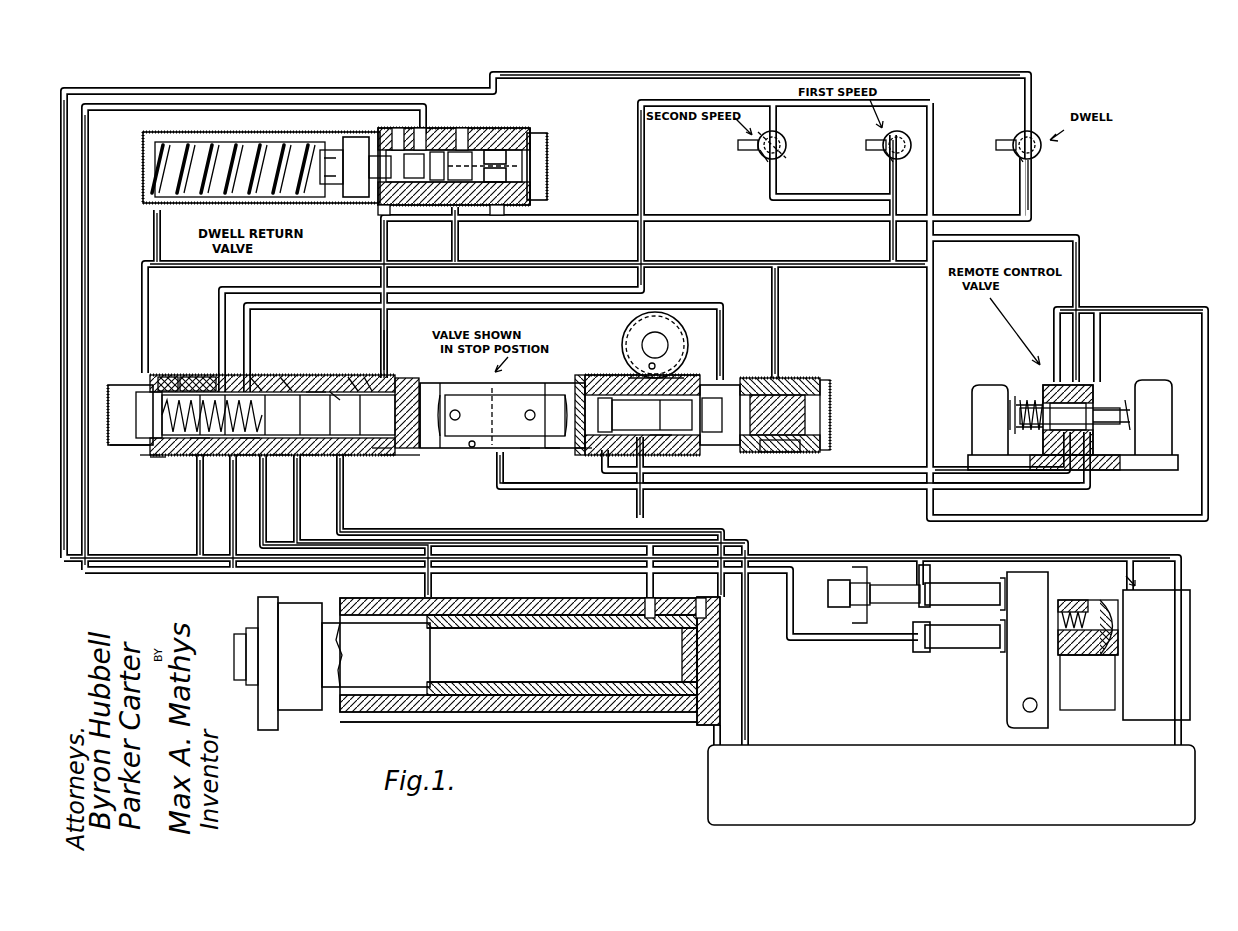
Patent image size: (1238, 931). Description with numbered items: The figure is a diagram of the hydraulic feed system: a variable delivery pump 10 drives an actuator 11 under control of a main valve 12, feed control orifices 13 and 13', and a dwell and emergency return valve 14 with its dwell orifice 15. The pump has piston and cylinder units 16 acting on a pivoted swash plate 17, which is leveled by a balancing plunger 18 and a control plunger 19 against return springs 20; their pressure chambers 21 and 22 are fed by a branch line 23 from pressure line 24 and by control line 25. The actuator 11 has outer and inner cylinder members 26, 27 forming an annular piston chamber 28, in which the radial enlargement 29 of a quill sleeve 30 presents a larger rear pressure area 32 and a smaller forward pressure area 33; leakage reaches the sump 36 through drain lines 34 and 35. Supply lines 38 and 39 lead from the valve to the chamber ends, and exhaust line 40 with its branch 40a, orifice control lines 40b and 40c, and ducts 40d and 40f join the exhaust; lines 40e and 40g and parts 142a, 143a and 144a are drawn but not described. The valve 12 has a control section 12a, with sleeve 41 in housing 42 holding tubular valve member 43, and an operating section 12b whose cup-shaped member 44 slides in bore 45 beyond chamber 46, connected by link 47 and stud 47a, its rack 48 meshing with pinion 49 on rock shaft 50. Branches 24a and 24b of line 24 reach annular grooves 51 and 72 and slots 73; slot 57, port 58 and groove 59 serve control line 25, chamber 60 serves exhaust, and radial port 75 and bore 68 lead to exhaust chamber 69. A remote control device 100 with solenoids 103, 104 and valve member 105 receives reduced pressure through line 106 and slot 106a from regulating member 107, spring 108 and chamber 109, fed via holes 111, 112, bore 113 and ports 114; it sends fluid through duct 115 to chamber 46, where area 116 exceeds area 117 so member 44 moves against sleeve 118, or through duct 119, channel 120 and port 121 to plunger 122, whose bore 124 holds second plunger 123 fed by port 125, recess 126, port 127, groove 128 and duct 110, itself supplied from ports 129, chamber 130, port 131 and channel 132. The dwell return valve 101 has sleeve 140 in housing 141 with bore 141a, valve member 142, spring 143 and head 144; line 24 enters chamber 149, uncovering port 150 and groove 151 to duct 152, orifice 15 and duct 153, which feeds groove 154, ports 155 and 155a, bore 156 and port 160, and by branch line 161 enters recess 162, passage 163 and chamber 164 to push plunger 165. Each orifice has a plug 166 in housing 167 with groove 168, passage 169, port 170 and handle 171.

The variable delivery pump 10 is at (1175, 674).
The hydraulic actuator 11 is at (352, 710).
The main valve 12 is at (832, 420).
The control section 12a is at (298, 374).
The operating section 12b is at (576, 372).
The feed control orifice 13 is at (923, 145).
The feed control orifice 13' is at (796, 146).
The combination dwell and emergency return valve 14 is at (140, 190).
The dwell orifice 15 is at (1045, 150).
The piston and cylinder units 16 is at (1068, 602).
The swash plate 17 is at (1012, 684).
The balancing plunger 18 is at (975, 600).
The control plunger 19 is at (958, 640).
The return springs 20 is at (1090, 650).
The pressure chamber 21 is at (915, 606).
The control chamber 22 is at (914, 652).
The branch line 23 is at (934, 572).
The pressure line 24 is at (155, 92).
The branch pressure line 24a is at (232, 568).
The branch pressure line 24b is at (196, 484).
The pump control line 25 is at (130, 112).
The outer cylinder member 26 is at (534, 704).
The inner cylinder member 27 is at (622, 690).
The annular piston chamber 28 is at (690, 700).
The piston 29 is at (690, 628).
The sleeve 30 is at (334, 684).
The rear pressure area 32 is at (702, 600).
The forward pressure area 33 is at (646, 610).
The drain line 34 is at (440, 718).
The drain line 35 is at (748, 716).
The sump 36 is at (820, 748).
The rear cylinder line 38 is at (297, 520).
The forward cylinder line 39 is at (258, 532).
The exhaust line 40 is at (338, 536).
The exhaust branch line 40a is at (672, 268).
The orifice pressure control line 40b is at (895, 197).
The orifice pressure control line 40c is at (644, 190).
The branch duct 40d is at (724, 330).
The line 40e is at (152, 230).
The duct 40f is at (452, 248).
The line 40g is at (1128, 310).
The valve sleeve 41 is at (432, 386).
The housing 42 is at (142, 458).
The valve member 43 is at (132, 446).
The cup-shaped member 44 is at (522, 446).
The bore 45 is at (546, 384).
The intermediate chamber 46 is at (470, 448).
The link 47 is at (462, 396).
The stud 47a is at (452, 384).
The rack 48 is at (630, 378).
The pinion 49 is at (624, 344).
The rock shaft 50 is at (640, 346).
The annular groove 51 is at (244, 456).
The milled slot 57 is at (203, 463).
The port 58 is at (254, 463).
The groove 59 is at (198, 456).
The annular chamber 60 is at (282, 456).
The bore 68 is at (138, 408).
The exhaust chamber 69 is at (122, 384).
The annular groove 72 is at (192, 376).
The milled slots 73 is at (170, 376).
The radial port 75 is at (158, 456).
The remote control device 100 is at (1150, 378).
The dwell return valve 101 is at (534, 126).
The solenoid 103 is at (988, 385).
The solenoid 104 is at (1150, 430).
The valve member 105 is at (1096, 382).
The remote control line 106 is at (1080, 264).
The slot 106a is at (390, 340).
The pressure regulating valve member 107 is at (316, 376).
The compression spring 108 is at (138, 428).
The chamber 109 is at (368, 376).
The duct 110 is at (426, 500).
The holes 111 is at (256, 376).
The holes 112 is at (284, 376).
The central axial bore 113 is at (330, 376).
The radial ports 114 is at (308, 456).
The duct 115 is at (496, 472).
The pressure area 116 is at (505, 415).
The pressure area 117 is at (404, 378).
The sleeve 118 is at (808, 388).
The duct 119 is at (952, 462).
The channel 120 is at (580, 448).
The port 121 is at (552, 450).
The plunger 122 is at (660, 440).
The second plunger 123 is at (715, 415).
The bore 124 is at (610, 386).
The port 125 is at (652, 415).
The annular recess 126 is at (593, 415).
The port 127 is at (642, 470).
The longitudinal groove 128 is at (705, 415).
The outlet ports 129 is at (352, 376).
The annular chamber 130 is at (384, 474).
The port 131 is at (342, 456).
The longitudinal channel 132 is at (384, 450).
The valve sleeve 140 is at (520, 195).
The housing 141 is at (466, 152).
The axial bore 141a is at (420, 127).
The control valve member 142 is at (438, 152).
The port 142a is at (398, 127).
The compression spring 143 is at (150, 170).
The spring chamber 143a is at (240, 140).
The head 144 is at (348, 190).
The plunger stem 144a is at (355, 135).
The pressure chamber 149 is at (546, 148).
The port 150 is at (500, 150).
The annular groove 151 is at (497, 212).
The duct 152 is at (624, 78).
The duct 153 is at (732, 175).
The annular groove 154 is at (384, 240).
The radial ports 155 is at (384, 212).
The ports 155a is at (462, 127).
The axial bore 156 is at (508, 163).
The port 160 is at (428, 162).
The branch line 161 is at (778, 283).
The annular recess 162 is at (780, 458).
The diagonal passage 163 is at (786, 384).
The pressure chamber 164 is at (830, 398).
The plunger 165 is at (758, 396).
The cylindrical plug 166 is at (770, 166).
The housing 167 is at (786, 134).
The circumferential groove 168 is at (764, 158).
The axial passage 169 is at (788, 144).
The radial port 170 is at (788, 140).
The handle 171 is at (748, 140).